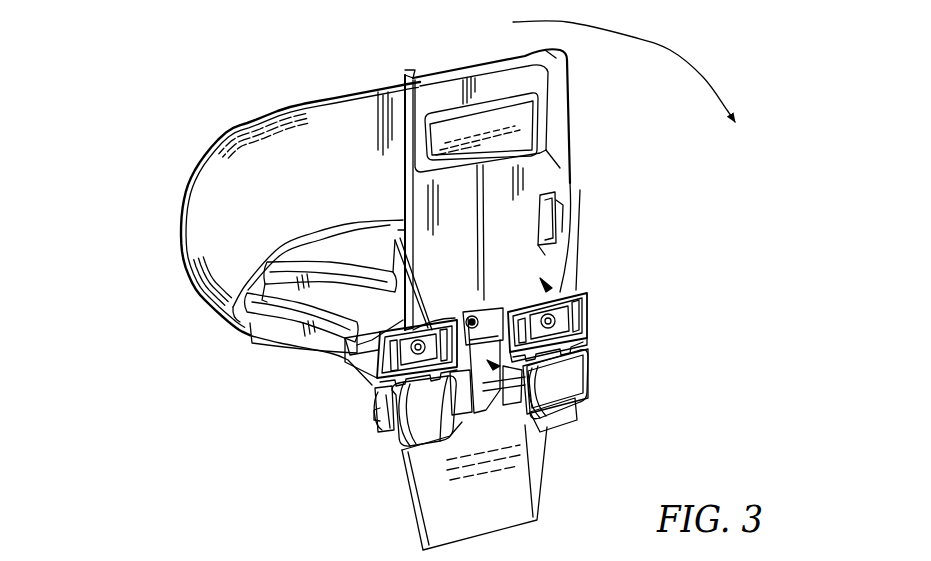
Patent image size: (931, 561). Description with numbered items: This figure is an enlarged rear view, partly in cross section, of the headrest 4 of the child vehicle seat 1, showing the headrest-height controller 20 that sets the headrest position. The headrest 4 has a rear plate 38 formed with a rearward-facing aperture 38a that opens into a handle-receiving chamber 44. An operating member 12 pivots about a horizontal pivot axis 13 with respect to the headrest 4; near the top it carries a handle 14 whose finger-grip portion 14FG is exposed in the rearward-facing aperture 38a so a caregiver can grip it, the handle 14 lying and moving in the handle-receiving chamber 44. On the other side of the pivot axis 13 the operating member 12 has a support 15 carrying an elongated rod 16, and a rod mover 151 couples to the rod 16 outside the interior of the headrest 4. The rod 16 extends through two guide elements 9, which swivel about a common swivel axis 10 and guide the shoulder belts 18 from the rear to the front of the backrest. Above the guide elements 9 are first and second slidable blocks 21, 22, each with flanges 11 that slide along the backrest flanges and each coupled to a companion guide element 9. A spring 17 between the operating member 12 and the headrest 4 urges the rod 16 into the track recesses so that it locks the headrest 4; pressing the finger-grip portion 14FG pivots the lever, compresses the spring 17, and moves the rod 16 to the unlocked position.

The child vehicle seat 1 is at (142, 74).
The headrest 4 is at (330, 133).
The guide element 9 is at (380, 398).
The swivel axis 10 is at (378, 378).
The flange 11 is at (572, 292).
The operating member 12 is at (508, 62).
The pivot axis 13 is at (398, 224).
The handle 14 is at (445, 130).
The finger-grip portion 14FG is at (520, 120).
The support 15 is at (585, 344).
The rod 16 is at (378, 425).
The spring 17 is at (415, 310).
The shoulder belt 18 is at (421, 452).
The headrest-height controller 20 is at (646, 380).
The first slidable block 21 is at (400, 253).
The second slidable block 22 is at (548, 280).
The rear plate 38 is at (566, 155).
The rearward-facing aperture 38a is at (405, 140).
The handle-receiving chamber 44 is at (411, 68).
The rod mover 151 is at (420, 434).